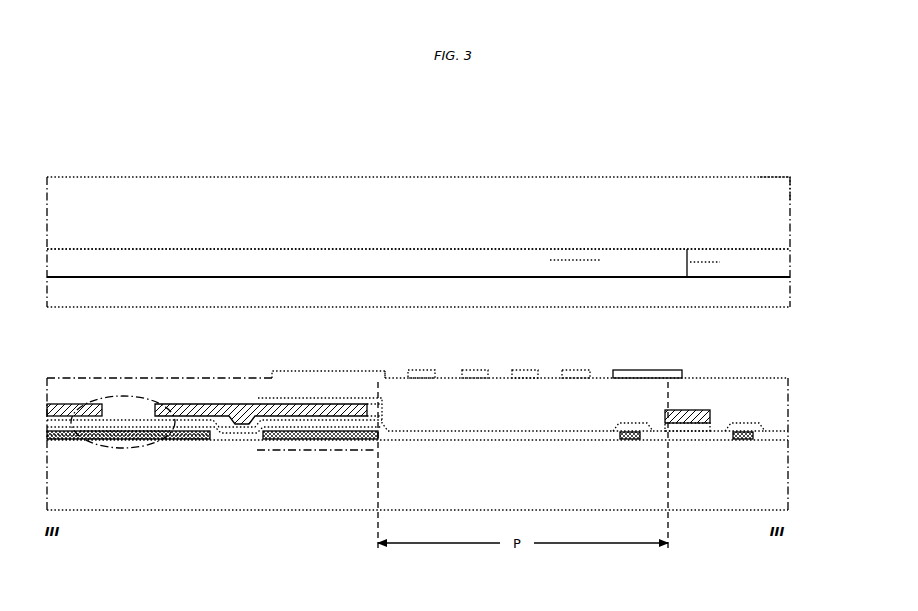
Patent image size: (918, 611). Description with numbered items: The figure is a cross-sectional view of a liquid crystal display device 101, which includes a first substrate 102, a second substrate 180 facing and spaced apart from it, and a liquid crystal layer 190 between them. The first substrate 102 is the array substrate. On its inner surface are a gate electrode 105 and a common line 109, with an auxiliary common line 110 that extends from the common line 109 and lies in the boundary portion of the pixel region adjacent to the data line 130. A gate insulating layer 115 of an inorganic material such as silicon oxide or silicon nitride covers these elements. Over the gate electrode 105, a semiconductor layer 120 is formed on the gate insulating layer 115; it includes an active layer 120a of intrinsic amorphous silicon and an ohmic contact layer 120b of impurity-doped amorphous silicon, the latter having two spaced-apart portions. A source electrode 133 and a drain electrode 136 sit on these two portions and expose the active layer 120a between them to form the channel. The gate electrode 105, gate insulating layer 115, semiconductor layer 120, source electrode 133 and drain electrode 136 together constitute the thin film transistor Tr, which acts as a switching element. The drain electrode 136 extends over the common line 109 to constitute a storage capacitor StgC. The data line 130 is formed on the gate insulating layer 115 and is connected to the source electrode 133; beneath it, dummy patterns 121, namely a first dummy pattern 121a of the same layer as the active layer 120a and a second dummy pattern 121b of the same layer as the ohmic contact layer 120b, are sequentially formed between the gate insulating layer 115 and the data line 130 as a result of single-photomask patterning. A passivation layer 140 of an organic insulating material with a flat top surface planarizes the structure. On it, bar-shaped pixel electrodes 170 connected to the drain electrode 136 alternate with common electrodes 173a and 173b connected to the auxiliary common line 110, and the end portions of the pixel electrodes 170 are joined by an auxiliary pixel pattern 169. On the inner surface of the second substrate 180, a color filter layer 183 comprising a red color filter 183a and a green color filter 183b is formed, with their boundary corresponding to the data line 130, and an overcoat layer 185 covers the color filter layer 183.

The liquid crystal display device 101 is at (742, 146).
The second substrate 180 is at (756, 221).
The overcoat layer 185 is at (262, 290).
The color filter layer 183 is at (668, 141).
The red color filter 183a is at (552, 260).
The green color filter 183b is at (710, 262).
The liquid crystal layer 190 is at (788, 344).
The first substrate 102 is at (759, 505).
The gate electrode 105 is at (95, 444).
The gate insulating layer 115 is at (485, 441).
The semiconductor layer 120 is at (158, 486).
The active layer 120a is at (150, 445).
The ohmic contact layer 120b is at (180, 446).
The source electrode 133 is at (75, 404).
The drain electrode 136 is at (175, 404).
The common line 109 is at (296, 442).
The data line 130 is at (681, 410).
The auxiliary common line 110 is at (627, 441).
The dummy patterns 121 is at (690, 463).
The first dummy pattern 121a is at (676, 439).
The second dummy pattern 121b is at (697, 439).
The passivation layer 140 is at (394, 384).
The auxiliary pixel pattern 169 is at (335, 371).
The pixel electrodes 170 is at (474, 370).
The common electrode 173a is at (648, 370).
The common electrode 173b is at (421, 370).
The thin film transistor Tr is at (90, 446).
The storage capacitor StgC is at (320, 451).